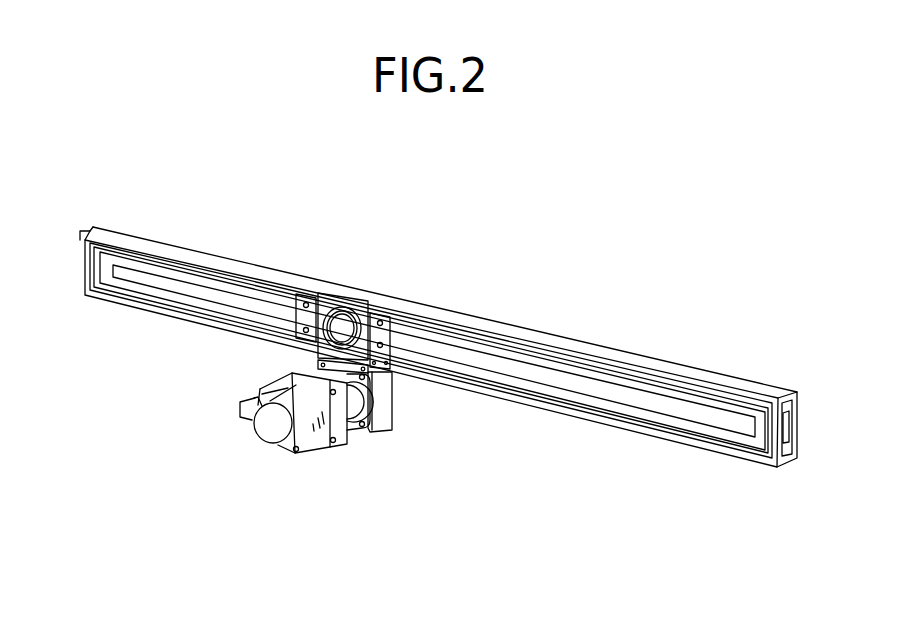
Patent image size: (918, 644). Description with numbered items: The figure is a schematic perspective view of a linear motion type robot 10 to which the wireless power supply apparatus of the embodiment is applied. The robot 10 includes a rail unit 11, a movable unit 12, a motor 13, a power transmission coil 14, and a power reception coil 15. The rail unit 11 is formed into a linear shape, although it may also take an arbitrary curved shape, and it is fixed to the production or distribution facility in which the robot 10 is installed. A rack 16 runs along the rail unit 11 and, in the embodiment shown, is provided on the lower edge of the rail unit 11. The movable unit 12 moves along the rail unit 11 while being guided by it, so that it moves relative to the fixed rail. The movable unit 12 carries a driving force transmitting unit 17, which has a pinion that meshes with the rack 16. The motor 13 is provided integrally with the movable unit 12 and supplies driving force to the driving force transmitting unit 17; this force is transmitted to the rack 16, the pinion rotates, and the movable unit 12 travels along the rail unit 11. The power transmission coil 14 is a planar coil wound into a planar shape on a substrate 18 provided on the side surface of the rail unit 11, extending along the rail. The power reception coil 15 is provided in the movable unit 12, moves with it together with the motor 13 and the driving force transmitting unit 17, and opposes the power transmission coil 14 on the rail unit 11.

The linear motion type robot 10 is at (488, 168).
The rail unit 11 is at (80, 267).
The movable unit 12 is at (387, 442).
The motor 13 is at (302, 456).
The power transmission coil 14 is at (587, 400).
The power reception coil 15 is at (321, 300).
The rack 16 is at (783, 469).
The driving force transmitting unit 17 is at (384, 400).
The substrate 18 is at (523, 367).